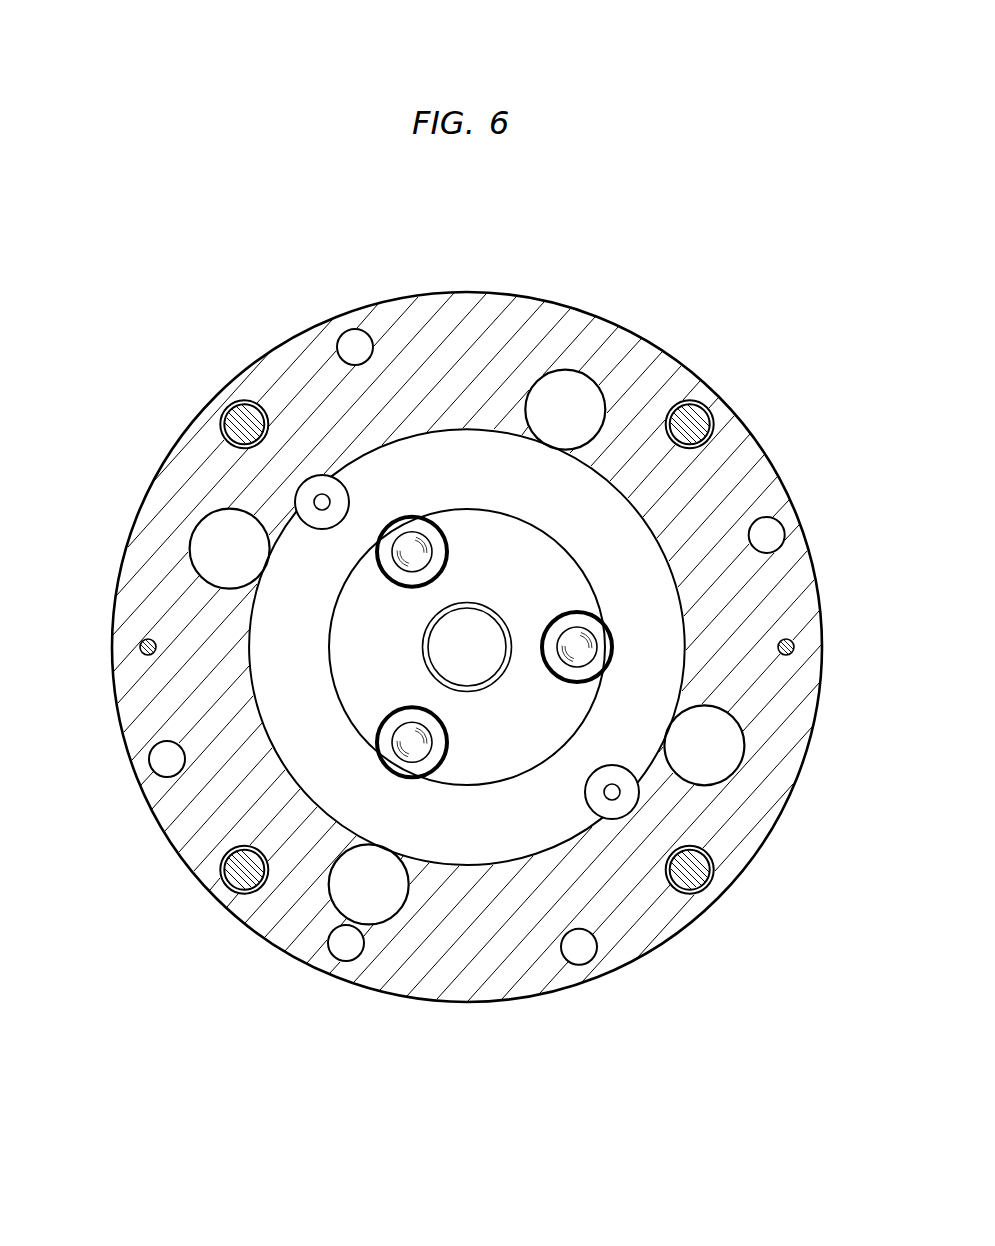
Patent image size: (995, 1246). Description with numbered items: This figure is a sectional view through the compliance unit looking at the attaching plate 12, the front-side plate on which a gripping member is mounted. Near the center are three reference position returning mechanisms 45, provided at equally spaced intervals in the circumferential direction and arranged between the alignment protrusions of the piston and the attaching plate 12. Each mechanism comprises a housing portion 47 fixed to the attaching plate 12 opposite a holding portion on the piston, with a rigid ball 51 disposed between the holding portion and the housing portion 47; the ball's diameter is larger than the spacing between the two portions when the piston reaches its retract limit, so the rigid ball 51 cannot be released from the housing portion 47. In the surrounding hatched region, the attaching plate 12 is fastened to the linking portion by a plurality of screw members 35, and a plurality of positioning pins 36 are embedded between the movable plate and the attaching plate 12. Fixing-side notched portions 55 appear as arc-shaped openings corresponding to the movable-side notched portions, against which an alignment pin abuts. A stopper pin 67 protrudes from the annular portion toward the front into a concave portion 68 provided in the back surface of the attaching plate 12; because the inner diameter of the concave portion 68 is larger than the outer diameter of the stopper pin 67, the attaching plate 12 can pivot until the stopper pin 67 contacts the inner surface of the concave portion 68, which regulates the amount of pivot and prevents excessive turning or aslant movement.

The attaching plate 12 is at (384, 988).
The reference position returning mechanism 45 is at (476, 765).
The housing portion 47 is at (388, 724).
The rigid ball 51 is at (408, 540).
The fixing-side notched portion 55 is at (212, 533).
The positioning pin 36 is at (141, 645).
The concave portion 68 is at (297, 492).
The stopper pin 67 is at (320, 500).
The screw member 35 is at (711, 882).